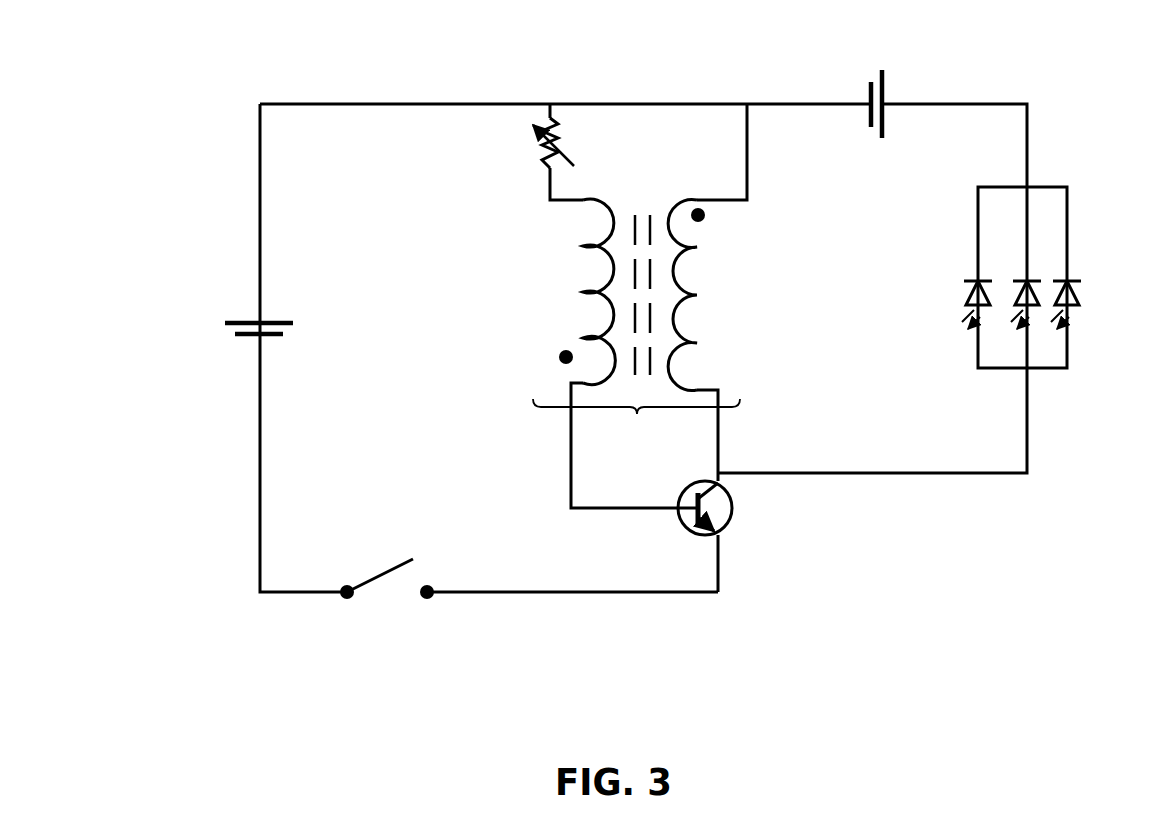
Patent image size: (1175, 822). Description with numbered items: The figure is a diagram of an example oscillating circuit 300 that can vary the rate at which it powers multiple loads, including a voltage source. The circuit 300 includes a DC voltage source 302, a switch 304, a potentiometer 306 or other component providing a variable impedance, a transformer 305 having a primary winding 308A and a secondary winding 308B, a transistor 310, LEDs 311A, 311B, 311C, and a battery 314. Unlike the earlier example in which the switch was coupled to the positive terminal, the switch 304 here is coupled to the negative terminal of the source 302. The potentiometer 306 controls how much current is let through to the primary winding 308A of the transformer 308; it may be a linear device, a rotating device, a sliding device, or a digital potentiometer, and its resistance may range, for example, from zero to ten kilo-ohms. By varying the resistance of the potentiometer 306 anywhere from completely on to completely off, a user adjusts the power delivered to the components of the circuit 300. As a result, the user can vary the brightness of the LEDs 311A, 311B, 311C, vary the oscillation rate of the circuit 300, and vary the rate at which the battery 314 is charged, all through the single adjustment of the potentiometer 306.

The oscillating circuit 300 is at (106, 65).
The DC voltage source 302 is at (292, 322).
The switch 304 is at (385, 572).
The transformer 305 is at (636, 420).
The potentiometer 306 is at (540, 143).
The transformer 308 is at (616, 295).
The primary winding 308A is at (607, 274).
The secondary winding 308B is at (677, 276).
The transistor 310 is at (731, 519).
The LED 311A is at (966, 287).
The LED 311B is at (1036, 290).
The LED 311C is at (1078, 293).
The battery 314 is at (886, 122).